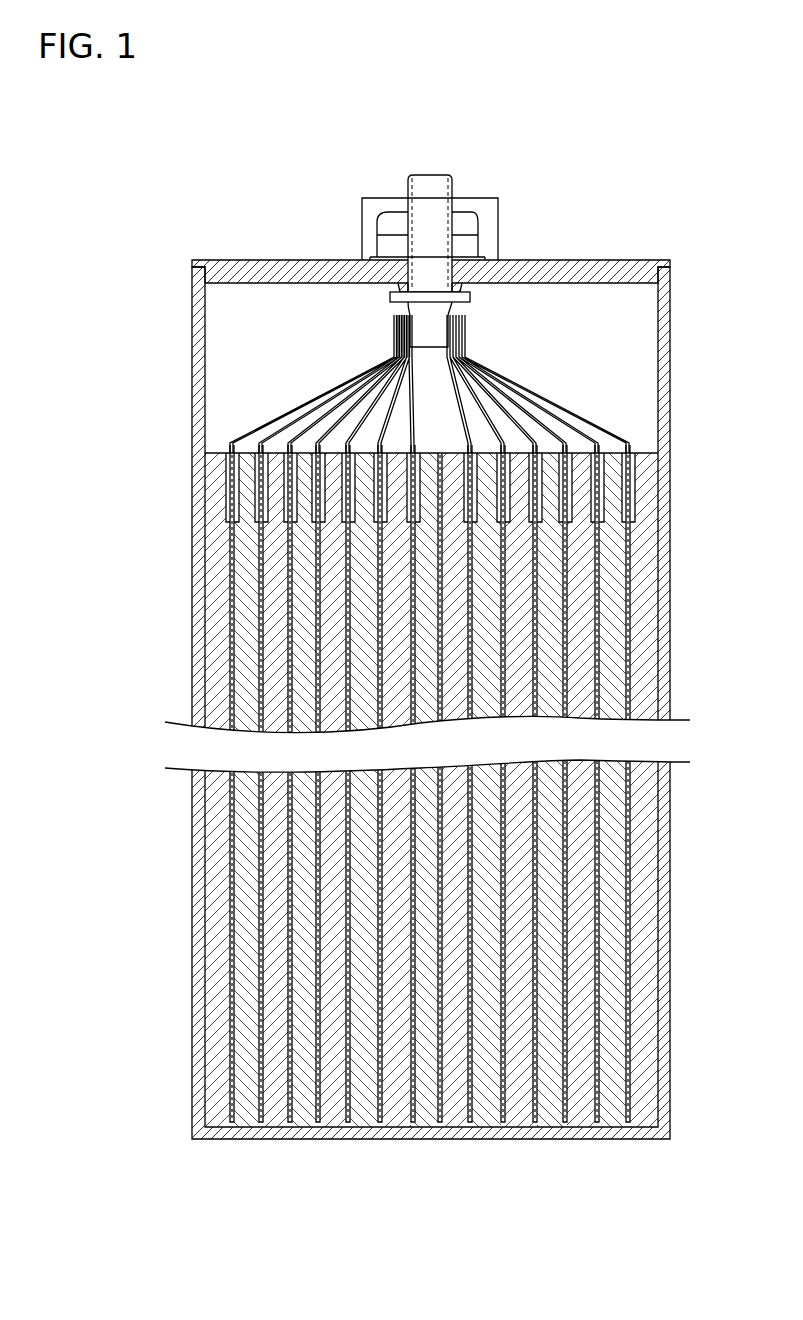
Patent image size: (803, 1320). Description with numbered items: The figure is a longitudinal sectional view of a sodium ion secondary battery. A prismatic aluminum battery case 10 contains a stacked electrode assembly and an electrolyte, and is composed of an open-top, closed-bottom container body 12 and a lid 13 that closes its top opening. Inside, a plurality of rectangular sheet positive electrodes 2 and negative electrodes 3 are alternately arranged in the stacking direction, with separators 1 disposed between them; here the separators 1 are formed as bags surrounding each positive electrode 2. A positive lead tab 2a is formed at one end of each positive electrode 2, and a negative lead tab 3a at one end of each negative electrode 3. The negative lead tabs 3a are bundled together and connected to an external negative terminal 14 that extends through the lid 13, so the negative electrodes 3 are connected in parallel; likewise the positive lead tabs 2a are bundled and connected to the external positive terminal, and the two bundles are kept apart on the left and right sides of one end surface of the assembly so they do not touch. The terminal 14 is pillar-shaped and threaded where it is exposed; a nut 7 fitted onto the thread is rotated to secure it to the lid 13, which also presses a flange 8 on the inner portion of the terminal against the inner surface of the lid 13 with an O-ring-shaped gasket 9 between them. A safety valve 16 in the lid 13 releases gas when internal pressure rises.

The separator 1 is at (235, 618).
The positive electrode 2 is at (250, 561).
The negative electrode 3 is at (222, 713).
The positive lead tab 2a is at (252, 435).
The negative lead tab 3a is at (297, 412).
The nut 7 is at (389, 218).
The flange 8 is at (393, 298).
The gasket 9 is at (472, 290).
The battery case 10 is at (420, 635).
The container body 12 is at (194, 306).
The lid 13 is at (237, 273).
The external negative terminal 14 is at (443, 190).
The safety valve 16 is at (487, 213).